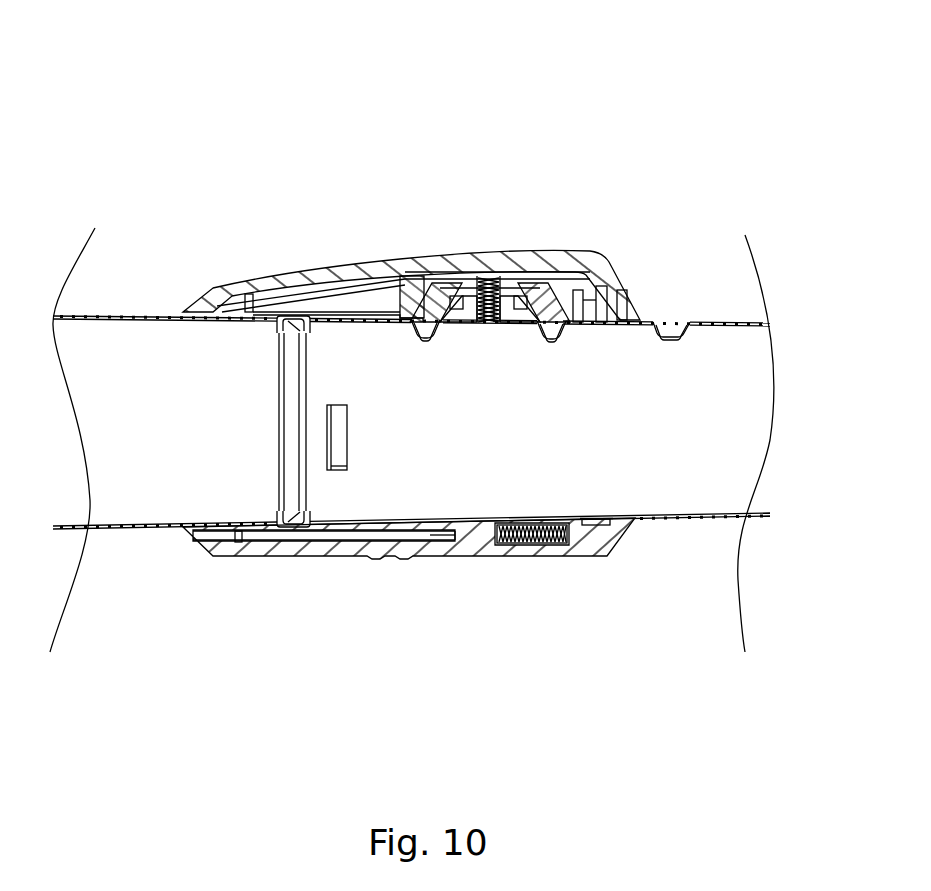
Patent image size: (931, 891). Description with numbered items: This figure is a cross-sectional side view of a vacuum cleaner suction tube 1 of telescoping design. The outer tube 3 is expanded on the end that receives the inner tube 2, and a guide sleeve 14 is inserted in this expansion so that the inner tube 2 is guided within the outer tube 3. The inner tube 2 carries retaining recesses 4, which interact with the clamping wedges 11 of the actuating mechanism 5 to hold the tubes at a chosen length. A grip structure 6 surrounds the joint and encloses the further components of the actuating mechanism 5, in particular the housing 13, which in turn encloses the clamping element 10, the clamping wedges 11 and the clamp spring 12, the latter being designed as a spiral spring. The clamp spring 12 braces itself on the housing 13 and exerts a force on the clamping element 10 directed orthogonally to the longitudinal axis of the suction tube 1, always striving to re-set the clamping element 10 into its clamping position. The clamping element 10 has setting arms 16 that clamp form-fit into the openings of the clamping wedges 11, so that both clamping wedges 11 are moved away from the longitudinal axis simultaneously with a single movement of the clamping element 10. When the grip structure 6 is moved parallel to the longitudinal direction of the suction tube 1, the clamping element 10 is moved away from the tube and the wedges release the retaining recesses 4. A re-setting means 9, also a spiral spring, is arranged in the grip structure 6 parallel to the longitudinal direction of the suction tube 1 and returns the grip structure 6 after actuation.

The vacuum cleaner suction tube 1 is at (262, 166).
The inner tube 2 is at (683, 520).
The outer tube 3 is at (123, 316).
The retaining recesses 4 is at (662, 321).
The actuating mechanism 5 is at (520, 192).
The grip structure 6 is at (486, 275).
The re-setting means 9 is at (533, 546).
The clamping element 10 is at (485, 324).
The clamping wedges 11 is at (420, 275).
The clamp spring 12 is at (508, 262).
The housing 13 is at (432, 283).
The guide sleeve 14 is at (392, 542).
The setting arms 16 is at (460, 316).